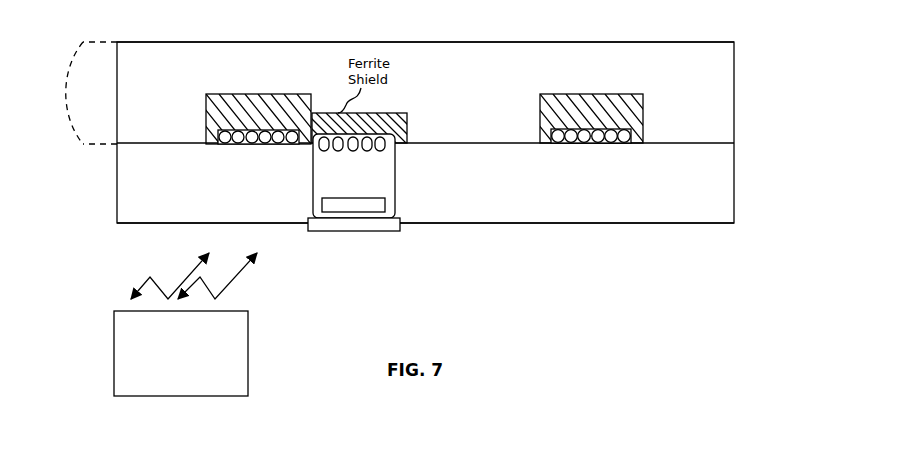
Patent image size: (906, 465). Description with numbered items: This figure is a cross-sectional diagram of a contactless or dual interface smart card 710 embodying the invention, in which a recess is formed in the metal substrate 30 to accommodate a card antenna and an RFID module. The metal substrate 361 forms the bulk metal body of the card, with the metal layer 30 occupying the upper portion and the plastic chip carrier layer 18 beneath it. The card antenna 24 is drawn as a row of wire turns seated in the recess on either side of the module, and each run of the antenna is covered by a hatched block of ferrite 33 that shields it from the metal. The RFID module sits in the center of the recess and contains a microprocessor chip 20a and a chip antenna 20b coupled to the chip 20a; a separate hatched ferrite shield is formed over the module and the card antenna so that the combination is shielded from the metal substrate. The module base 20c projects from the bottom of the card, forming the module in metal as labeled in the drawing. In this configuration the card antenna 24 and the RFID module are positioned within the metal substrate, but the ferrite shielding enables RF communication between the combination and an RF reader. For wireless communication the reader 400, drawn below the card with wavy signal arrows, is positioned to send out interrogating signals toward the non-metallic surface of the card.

The RFID tag system 710 is at (149, 28).
The metal substrate 361 is at (77, 93).
The ferrite block 33 is at (245, 94).
The card antenna 24 is at (238, 157).
The metal substrate 30 is at (734, 110).
The plastic chip carrier layer 18 is at (734, 186).
The microprocessor chip 20a is at (360, 197).
The chip antenna 20b is at (361, 151).
The module base 20c is at (388, 230).
The reader 400 is at (235, 384).